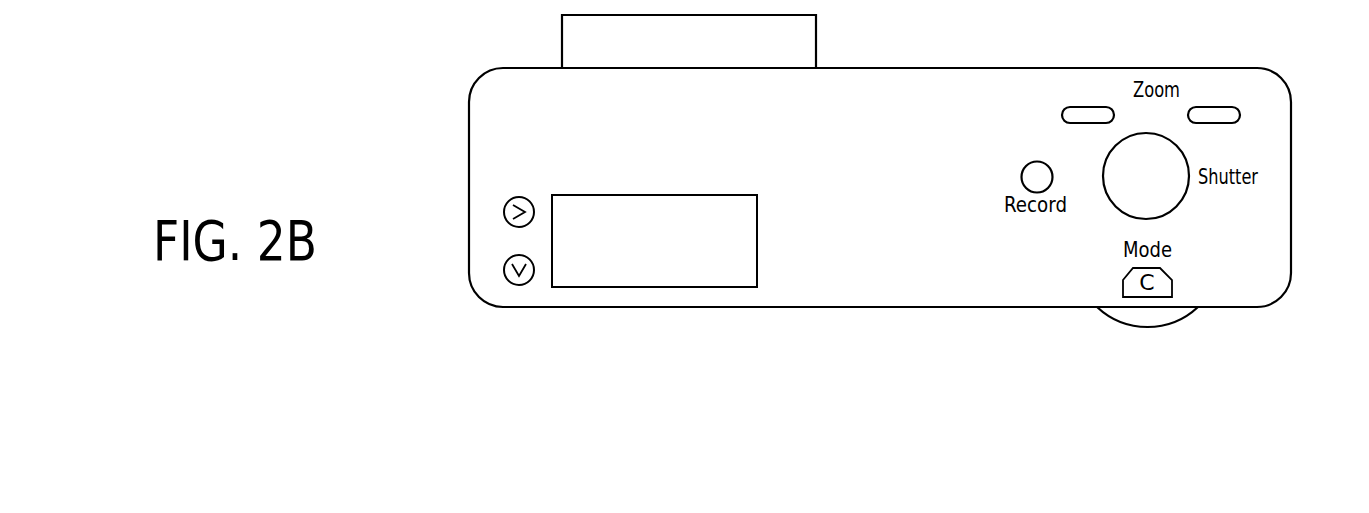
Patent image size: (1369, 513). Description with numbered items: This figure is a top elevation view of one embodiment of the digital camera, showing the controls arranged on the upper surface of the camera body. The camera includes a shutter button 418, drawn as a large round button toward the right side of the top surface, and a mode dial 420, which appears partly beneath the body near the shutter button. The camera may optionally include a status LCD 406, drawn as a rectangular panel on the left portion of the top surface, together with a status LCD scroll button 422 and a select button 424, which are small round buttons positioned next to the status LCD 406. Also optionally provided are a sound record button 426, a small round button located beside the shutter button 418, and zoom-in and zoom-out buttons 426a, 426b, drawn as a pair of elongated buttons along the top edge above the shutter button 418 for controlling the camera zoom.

The status LCD 406 is at (655, 287).
The shutter button 418 is at (1113, 204).
The mode dial 420 is at (1183, 316).
The status LCD scroll button 422 is at (504, 212).
The select button 424 is at (504, 270).
The sound record button 426 is at (1022, 170).
The zoom-in button 426a is at (1108, 107).
The zoom-out button 426b is at (1236, 107).